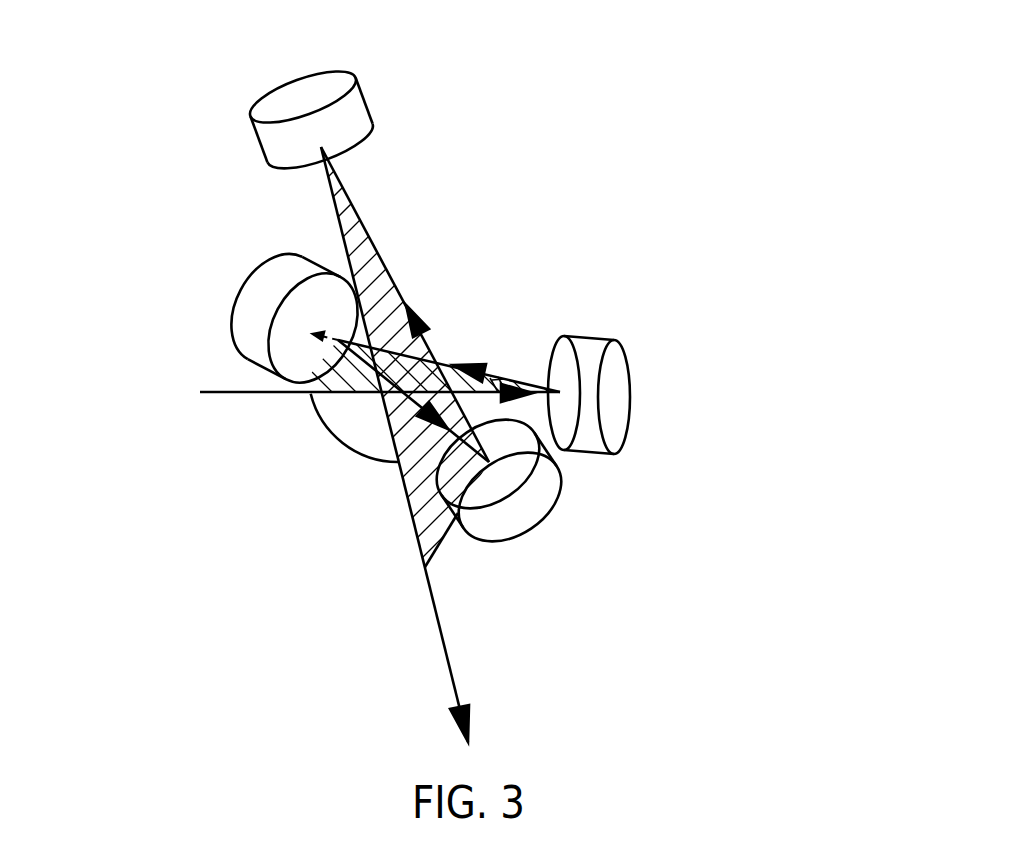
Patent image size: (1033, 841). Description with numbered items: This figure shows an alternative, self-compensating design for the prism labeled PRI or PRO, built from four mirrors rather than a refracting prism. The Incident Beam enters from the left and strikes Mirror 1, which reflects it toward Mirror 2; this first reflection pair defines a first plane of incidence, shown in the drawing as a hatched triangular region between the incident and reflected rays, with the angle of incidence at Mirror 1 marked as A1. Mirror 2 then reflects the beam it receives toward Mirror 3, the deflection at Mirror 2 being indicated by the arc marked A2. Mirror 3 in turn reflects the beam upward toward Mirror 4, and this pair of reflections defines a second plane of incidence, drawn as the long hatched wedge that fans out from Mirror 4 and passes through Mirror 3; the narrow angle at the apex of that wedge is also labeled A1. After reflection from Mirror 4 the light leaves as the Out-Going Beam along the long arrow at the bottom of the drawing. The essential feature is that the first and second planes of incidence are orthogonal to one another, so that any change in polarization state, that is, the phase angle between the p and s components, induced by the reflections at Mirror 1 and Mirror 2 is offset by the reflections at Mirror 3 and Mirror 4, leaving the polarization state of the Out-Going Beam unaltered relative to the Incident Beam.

The mirror Mirror 1 is at (638, 403).
The mirror Mirror 2 is at (232, 290).
The mirror Mirror 3 is at (538, 535).
The mirror Mirror 4 is at (293, 72).
The angle of incidence A1 is at (355, 205).
The angle of incidence A2 is at (345, 445).
The prism PRI or PRO is at (483, 103).
The incident beam Incident Beam is at (341, 411).
The out-going beam Out-Going Beam is at (395, 444).